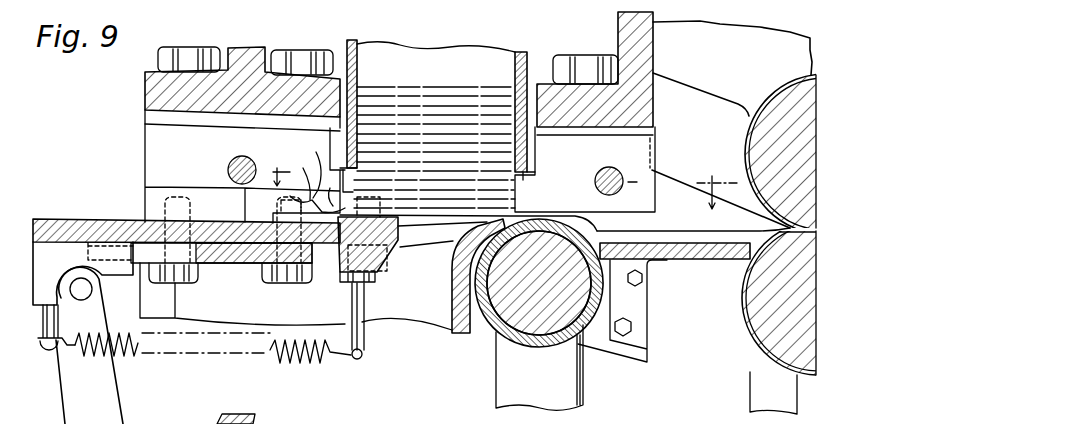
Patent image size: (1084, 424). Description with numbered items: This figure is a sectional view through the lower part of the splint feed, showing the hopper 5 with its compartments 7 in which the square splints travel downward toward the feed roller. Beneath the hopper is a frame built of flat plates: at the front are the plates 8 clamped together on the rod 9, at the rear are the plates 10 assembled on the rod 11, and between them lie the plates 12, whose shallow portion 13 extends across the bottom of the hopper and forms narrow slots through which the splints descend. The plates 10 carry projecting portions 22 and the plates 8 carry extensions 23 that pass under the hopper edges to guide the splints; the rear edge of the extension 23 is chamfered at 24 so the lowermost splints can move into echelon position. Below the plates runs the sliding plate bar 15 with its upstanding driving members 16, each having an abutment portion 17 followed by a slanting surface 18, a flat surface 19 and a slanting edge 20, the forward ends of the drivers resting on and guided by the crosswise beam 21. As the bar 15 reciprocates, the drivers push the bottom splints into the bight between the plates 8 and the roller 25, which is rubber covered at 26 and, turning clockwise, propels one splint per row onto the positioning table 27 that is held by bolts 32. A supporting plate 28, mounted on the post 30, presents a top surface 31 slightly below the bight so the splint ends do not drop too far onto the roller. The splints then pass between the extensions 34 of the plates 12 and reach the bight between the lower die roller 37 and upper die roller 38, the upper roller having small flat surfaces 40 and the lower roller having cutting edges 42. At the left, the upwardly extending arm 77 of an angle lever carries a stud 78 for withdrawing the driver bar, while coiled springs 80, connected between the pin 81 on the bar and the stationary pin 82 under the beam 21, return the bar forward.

The hopper 5 is at (447, 55).
The compartments 7 is at (400, 52).
The plates 8 is at (585, 112).
The rod 9 is at (607, 181).
The plates 10 is at (245, 135).
The rod 11 is at (247, 161).
The plates 12 is at (693, 224).
The shallow portion 13 is at (415, 246).
The sliding plate bar 15 is at (108, 219).
The driving members 16 is at (258, 212).
The abutment portion 17 is at (340, 188).
The slanting surface 18 is at (312, 168).
The flat surface 19 is at (300, 177).
The slanting edge 20 is at (330, 196).
The beam 21 is at (337, 272).
The projecting portions 22 is at (242, 124).
The extensions 23 is at (524, 186).
The chamfered rear edge 24 is at (534, 208).
The roller 25 is at (490, 326).
The rubber covering 26 is at (518, 345).
The positioning table 27 is at (699, 260).
The supporting plate 28 is at (452, 296).
The post 30 is at (539, 367).
The top surface 31 is at (472, 221).
The bolts 32 is at (641, 326).
The extensions 34 is at (740, 193).
The lower die roller 37 is at (762, 335).
The upper die roller 38 is at (792, 97).
The flat surfaces 40 is at (758, 104).
The cutting edges 42 is at (768, 368).
The upwardly extending arm 77 is at (89, 345).
The stud 78 is at (82, 299).
The coiled springs 80 is at (100, 354).
The pin 81 is at (38, 318).
The stationary pin 82 is at (368, 335).